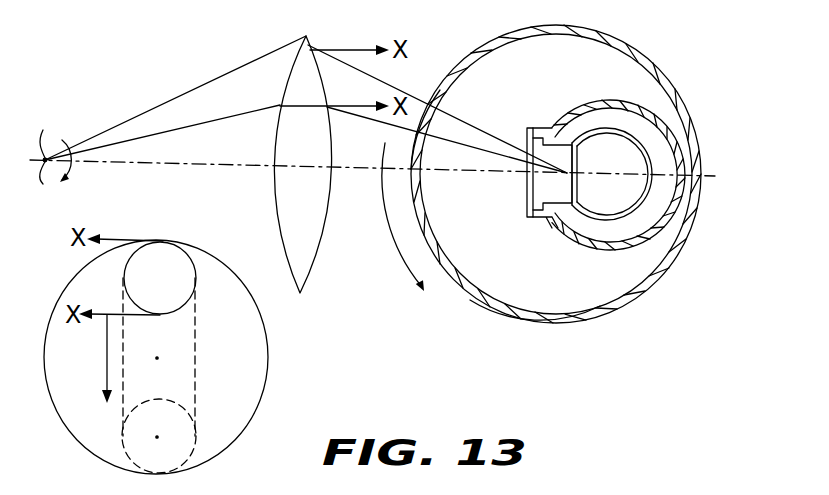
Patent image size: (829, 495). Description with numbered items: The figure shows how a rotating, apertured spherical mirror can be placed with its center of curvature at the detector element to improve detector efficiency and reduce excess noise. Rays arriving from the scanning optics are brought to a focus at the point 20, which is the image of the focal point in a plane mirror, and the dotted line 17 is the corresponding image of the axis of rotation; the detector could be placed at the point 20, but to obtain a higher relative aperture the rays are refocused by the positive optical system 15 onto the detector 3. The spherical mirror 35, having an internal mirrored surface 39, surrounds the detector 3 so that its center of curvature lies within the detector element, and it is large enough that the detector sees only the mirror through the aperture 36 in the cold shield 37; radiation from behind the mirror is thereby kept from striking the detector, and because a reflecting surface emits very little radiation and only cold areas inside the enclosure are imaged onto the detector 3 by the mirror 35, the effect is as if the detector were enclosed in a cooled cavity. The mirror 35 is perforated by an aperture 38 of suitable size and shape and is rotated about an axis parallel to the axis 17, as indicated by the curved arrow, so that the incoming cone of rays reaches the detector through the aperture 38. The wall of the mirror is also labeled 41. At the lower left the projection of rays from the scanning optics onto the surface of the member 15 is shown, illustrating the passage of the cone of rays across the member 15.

The detector 3 is at (576, 170).
The positive optical system 15 is at (305, 38).
The dotted line image of axis of rotation 17 is at (49, 141).
The focal point image 20 is at (63, 174).
The spherical mirror 35 is at (603, 34).
The aperture in cold shield 36 is at (540, 182).
The cold shield 37 is at (552, 130).
The aperture in mirror 38 is at (432, 116).
The internal mirrored surface 39 is at (533, 312).
The drum wall 41 is at (649, 61).